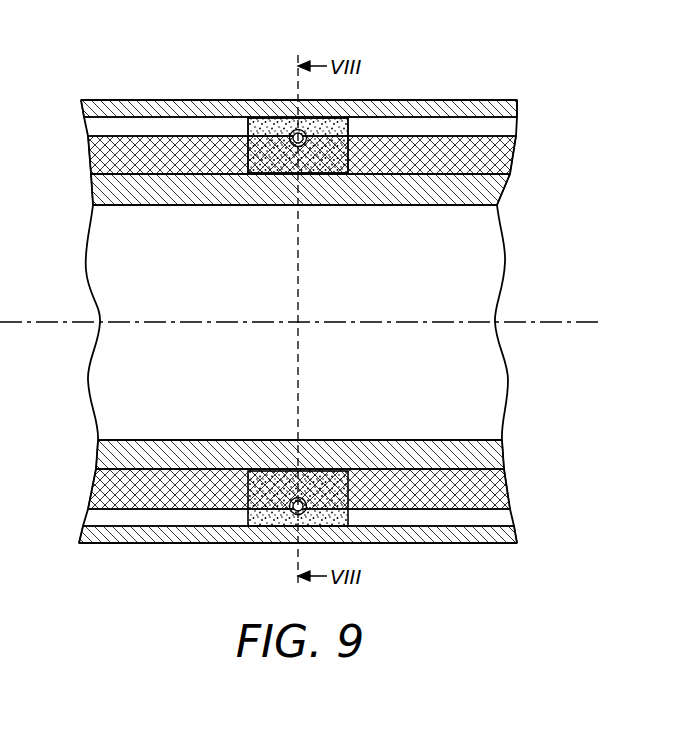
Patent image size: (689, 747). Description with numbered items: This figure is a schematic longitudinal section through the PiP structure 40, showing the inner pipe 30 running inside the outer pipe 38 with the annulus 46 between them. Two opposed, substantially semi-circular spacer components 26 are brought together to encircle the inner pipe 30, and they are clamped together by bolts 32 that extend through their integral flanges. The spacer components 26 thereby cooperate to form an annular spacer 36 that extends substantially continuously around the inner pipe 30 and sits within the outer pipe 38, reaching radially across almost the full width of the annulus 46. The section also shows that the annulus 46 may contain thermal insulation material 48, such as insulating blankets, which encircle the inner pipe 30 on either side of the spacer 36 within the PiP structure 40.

The PiP structure 40 is at (533, 72).
The outer pipe 38 is at (110, 108).
The annular spacer 36 is at (247, 123).
The annulus 46 is at (438, 127).
The thermal insulation material 48 is at (140, 162).
The spacer component 26 is at (267, 163).
The bolt 32 is at (306, 144).
The inner pipe 30 is at (172, 447).